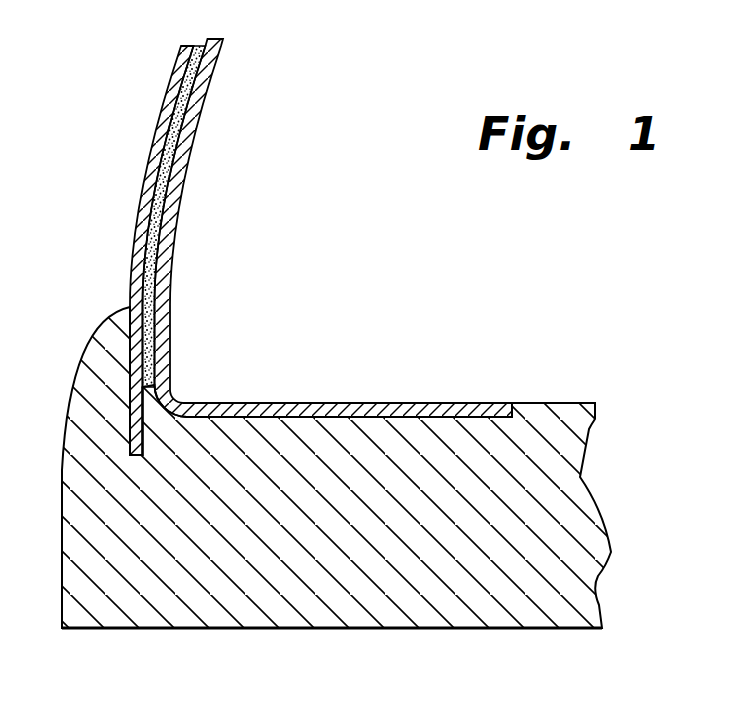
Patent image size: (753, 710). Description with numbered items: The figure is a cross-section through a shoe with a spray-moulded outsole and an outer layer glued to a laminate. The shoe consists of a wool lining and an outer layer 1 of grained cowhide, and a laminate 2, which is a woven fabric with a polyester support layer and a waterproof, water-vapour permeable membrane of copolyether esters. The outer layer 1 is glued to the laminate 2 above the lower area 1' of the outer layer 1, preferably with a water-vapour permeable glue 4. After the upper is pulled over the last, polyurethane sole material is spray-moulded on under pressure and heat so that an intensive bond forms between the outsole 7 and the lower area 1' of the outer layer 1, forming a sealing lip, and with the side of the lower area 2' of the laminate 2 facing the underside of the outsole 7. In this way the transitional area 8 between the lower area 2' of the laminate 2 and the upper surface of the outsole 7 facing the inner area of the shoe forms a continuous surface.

The outer layer 1 is at (153, 250).
The lower area of the outer layer 1' is at (80, 463).
The laminate 2 is at (334, 228).
The lower area of the laminate 2' is at (349, 551).
The water-vapour permeable glue 4 is at (198, 50).
The outsole 7 is at (562, 432).
The transitional area 8 is at (510, 392).